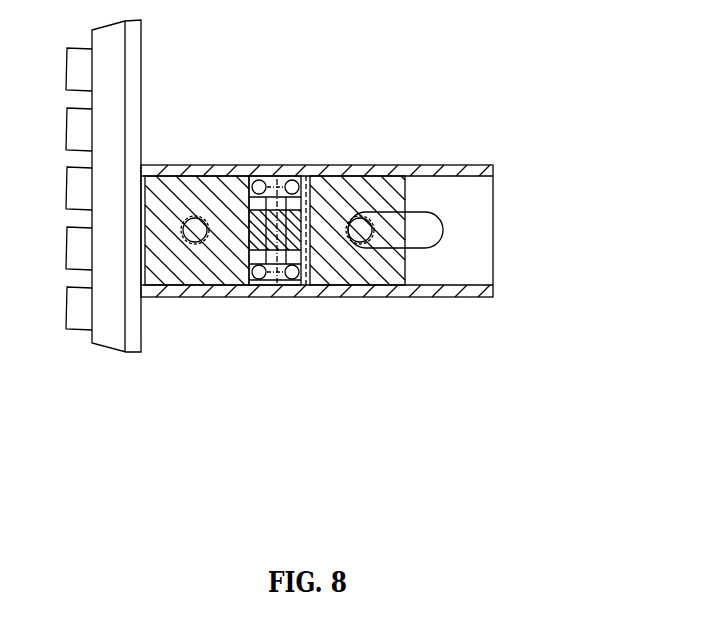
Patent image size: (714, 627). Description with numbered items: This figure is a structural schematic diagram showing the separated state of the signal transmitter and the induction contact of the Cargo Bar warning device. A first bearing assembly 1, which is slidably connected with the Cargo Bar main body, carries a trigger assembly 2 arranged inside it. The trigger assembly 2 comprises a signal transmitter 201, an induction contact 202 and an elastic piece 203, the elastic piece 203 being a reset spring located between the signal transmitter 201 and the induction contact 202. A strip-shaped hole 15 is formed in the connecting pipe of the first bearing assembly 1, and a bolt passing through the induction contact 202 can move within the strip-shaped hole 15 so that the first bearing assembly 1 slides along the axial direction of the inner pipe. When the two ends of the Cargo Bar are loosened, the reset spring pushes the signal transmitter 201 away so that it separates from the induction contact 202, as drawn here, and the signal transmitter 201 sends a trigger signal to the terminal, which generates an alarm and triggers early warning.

The first bearing assembly 1 is at (290, 133).
The trigger assembly 2 is at (322, 274).
The signal transmitter 201 is at (193, 267).
The induction contact 202 is at (397, 268).
The elastic piece 203 is at (292, 265).
The strip-shaped hole 15 is at (424, 230).